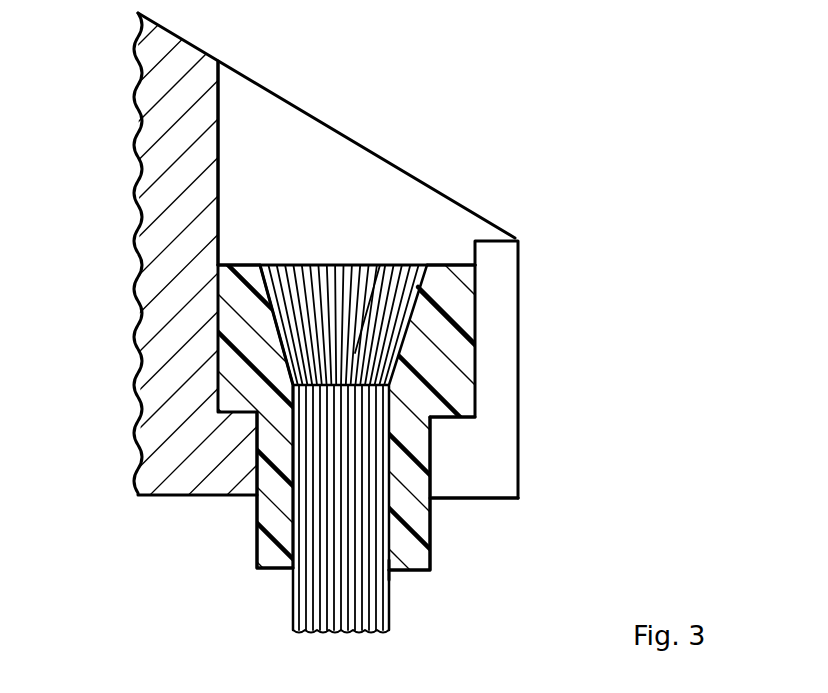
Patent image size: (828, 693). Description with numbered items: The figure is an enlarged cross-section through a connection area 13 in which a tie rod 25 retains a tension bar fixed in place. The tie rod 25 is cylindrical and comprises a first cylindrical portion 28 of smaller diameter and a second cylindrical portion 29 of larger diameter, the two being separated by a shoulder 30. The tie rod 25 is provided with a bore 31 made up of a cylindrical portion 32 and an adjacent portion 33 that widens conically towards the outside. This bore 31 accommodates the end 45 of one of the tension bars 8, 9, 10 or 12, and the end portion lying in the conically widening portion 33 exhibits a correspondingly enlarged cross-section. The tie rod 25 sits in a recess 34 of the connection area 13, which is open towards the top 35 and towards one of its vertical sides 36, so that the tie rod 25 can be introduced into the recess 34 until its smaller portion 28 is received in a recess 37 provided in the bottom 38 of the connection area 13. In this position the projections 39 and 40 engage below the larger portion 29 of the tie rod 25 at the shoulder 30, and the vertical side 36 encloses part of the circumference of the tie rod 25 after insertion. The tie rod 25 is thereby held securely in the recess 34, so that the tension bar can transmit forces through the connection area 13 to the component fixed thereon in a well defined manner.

The tension bar 8 is at (278, 465).
The tension bar 9 is at (278, 465).
The tension bar 10 is at (278, 465).
The tension bar 12 is at (312, 603).
The connection area 13 is at (424, 128).
The tie rod 25 is at (440, 348).
The first cylindrical portion 28 is at (277, 537).
The second cylindrical portion 29 is at (232, 323).
The shoulder 30 is at (238, 420).
The bore 31 is at (410, 590).
The cylindrical portion 32 is at (403, 522).
The conically widening portion 33 is at (417, 308).
The recess 34 is at (257, 133).
The top 35 is at (347, 138).
The vertical side 36 is at (520, 363).
The recess 37 is at (430, 447).
The bottom 38 is at (490, 502).
The projection 39 is at (226, 460).
The projection 40 is at (460, 472).
The end 45 is at (380, 265).